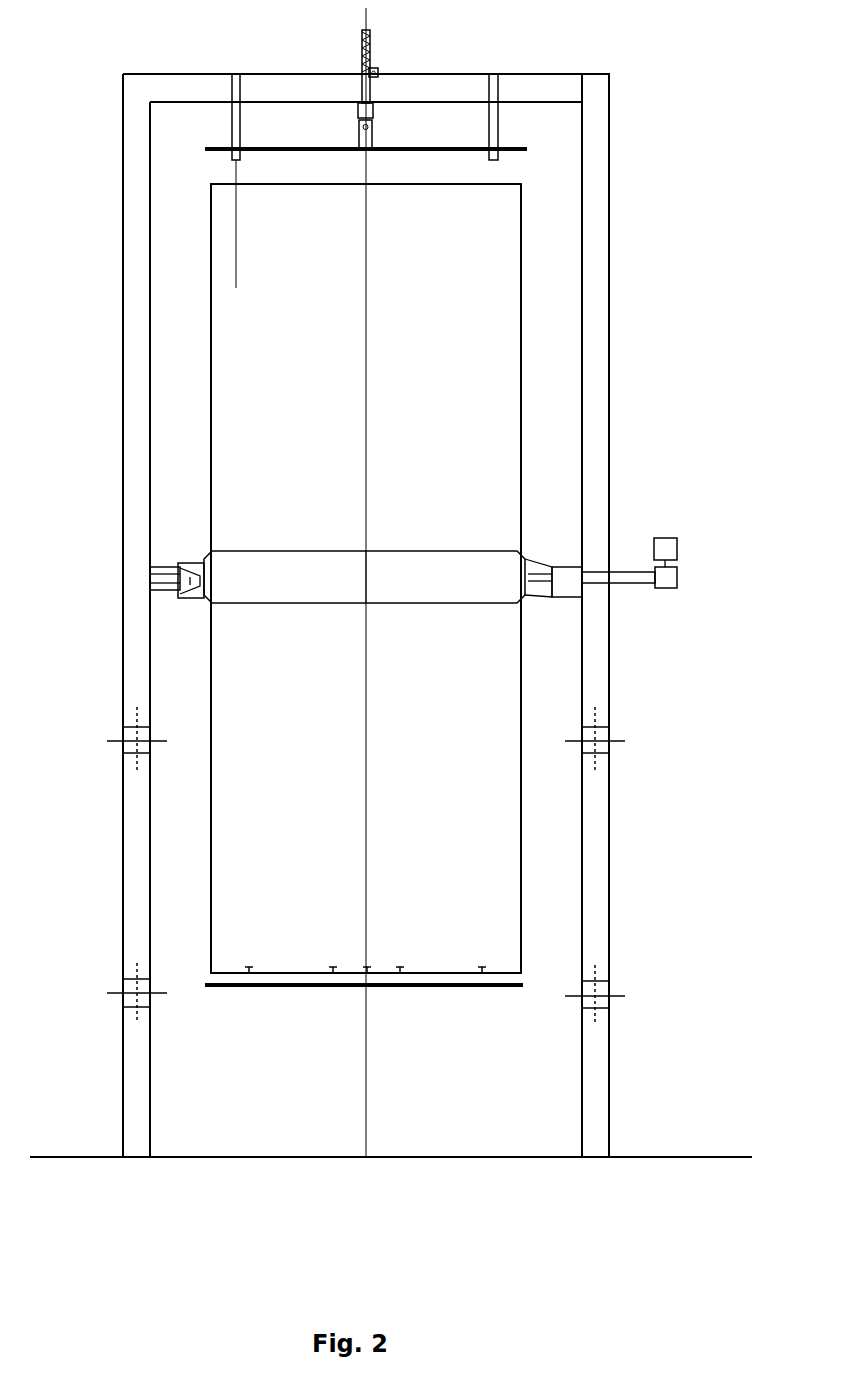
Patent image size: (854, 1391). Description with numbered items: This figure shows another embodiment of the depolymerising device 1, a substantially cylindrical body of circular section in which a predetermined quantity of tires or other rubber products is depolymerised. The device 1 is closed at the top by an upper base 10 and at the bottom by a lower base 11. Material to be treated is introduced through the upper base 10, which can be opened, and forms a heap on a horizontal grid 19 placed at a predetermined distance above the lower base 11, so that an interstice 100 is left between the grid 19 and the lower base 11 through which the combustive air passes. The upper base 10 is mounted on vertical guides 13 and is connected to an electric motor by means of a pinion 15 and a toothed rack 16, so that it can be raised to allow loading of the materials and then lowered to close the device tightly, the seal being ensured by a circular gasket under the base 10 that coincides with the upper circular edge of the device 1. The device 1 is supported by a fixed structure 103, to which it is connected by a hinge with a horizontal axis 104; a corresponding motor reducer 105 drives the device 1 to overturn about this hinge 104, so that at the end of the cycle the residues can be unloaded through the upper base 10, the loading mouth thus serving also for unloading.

The depolymerising device 1 is at (192, 340).
The upper base 10 is at (223, 143).
The lower base 11 is at (418, 1020).
The vertical guides 13 is at (243, 124).
The pinion 15 is at (380, 70).
The toothed rack 16 is at (361, 40).
The horizontal grid 19 is at (440, 970).
The interstice 100 is at (296, 980).
The fixed structure 103 is at (603, 350).
The hinge with a horizontal axis 104 is at (186, 565).
The motor reducer 105 is at (672, 525).